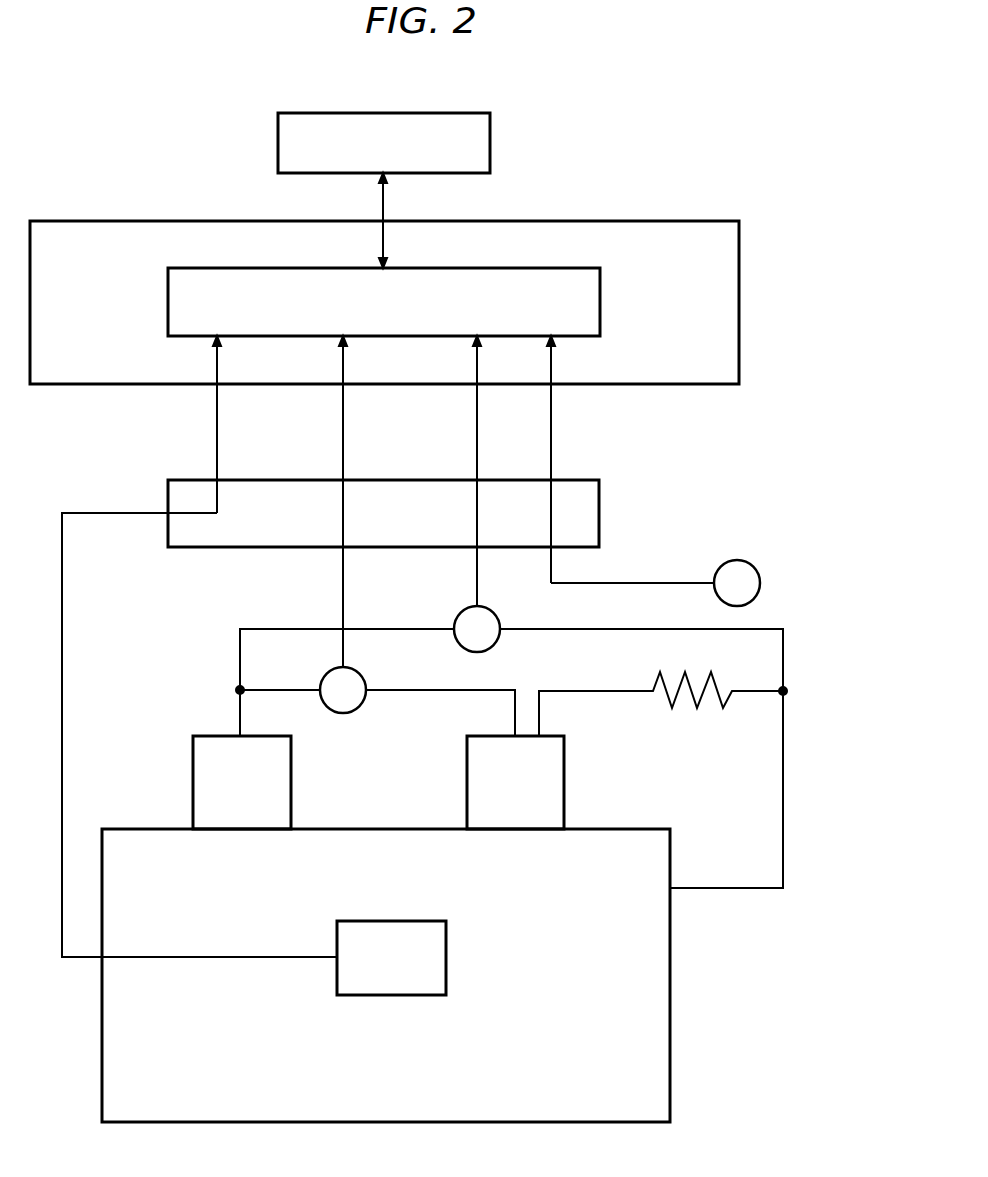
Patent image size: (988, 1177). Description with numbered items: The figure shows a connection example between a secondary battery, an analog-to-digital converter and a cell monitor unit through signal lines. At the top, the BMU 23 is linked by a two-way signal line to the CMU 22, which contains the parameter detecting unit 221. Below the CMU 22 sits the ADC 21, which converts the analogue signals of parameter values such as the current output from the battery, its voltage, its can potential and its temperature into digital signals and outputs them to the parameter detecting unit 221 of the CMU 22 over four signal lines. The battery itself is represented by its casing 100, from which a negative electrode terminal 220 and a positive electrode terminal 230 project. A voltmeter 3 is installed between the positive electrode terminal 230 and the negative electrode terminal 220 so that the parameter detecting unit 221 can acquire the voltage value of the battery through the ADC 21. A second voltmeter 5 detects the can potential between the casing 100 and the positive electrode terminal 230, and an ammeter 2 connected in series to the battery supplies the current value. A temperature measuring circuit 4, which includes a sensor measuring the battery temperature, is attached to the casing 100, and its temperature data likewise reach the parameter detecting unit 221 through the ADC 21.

The BMU 23 is at (466, 113).
The CMU 22 is at (638, 221).
The parameter detecting unit 221 is at (515, 268).
The ADC 21 is at (570, 480).
The ammeter 2 is at (754, 566).
The voltmeter 5 is at (492, 612).
The voltmeter 3 is at (358, 672).
The negative electrode terminal 220 is at (291, 768).
The positive electrode terminal 230 is at (564, 768).
The temperature measuring circuit 4 is at (415, 921).
The casing 100 is at (693, 1000).